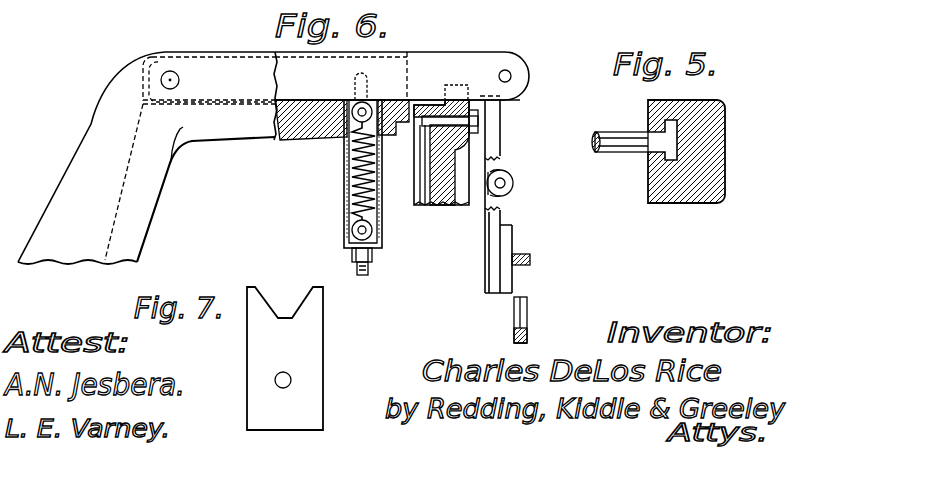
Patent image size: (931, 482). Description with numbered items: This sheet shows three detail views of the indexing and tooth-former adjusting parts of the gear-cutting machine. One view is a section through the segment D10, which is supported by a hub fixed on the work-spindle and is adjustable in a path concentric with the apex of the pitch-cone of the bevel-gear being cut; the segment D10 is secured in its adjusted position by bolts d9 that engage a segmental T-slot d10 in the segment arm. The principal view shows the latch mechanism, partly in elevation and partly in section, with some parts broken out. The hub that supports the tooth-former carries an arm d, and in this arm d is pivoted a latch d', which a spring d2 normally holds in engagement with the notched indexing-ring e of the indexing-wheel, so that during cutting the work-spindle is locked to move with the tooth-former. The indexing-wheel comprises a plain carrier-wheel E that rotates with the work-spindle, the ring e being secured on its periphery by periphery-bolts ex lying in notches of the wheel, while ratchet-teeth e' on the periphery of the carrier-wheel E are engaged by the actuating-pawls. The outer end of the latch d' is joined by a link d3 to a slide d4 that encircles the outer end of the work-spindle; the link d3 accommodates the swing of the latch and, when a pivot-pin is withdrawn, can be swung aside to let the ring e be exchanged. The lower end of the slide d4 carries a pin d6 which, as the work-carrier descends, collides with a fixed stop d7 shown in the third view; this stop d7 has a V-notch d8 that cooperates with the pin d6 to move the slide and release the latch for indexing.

In FIG. 6, the arm d is at (146, 158).
In FIG. 6, the latch d' is at (401, 96).
In FIG. 6, the spring d2 is at (345, 186).
In FIG. 6, the link d3 is at (502, 153).
In FIG. 6, the slide d4 is at (499, 212).
In FIG. 6, the pin d6 is at (522, 257).
In FIG. 6, the stop d7 is at (514, 339).
In FIG. 7, the stop d7 is at (285, 358).
In FIG. 6, the V-notch d8 is at (530, 313).
In FIG. 7, the V-notch d8 is at (283, 300).
In FIG. 5, the bolt d9 is at (626, 142).
In FIG. 5, the segmental T-slot d10 is at (665, 123).
In FIG. 5, the segment D10 is at (697, 194).
In FIG. 6, the indexing-ring e is at (407, 102).
In FIG. 6, the ratchet-teeth e' is at (441, 84).
In FIG. 6, the periphery-bolts ex is at (442, 124).
In FIG. 6, the carrier-wheel E is at (440, 204).